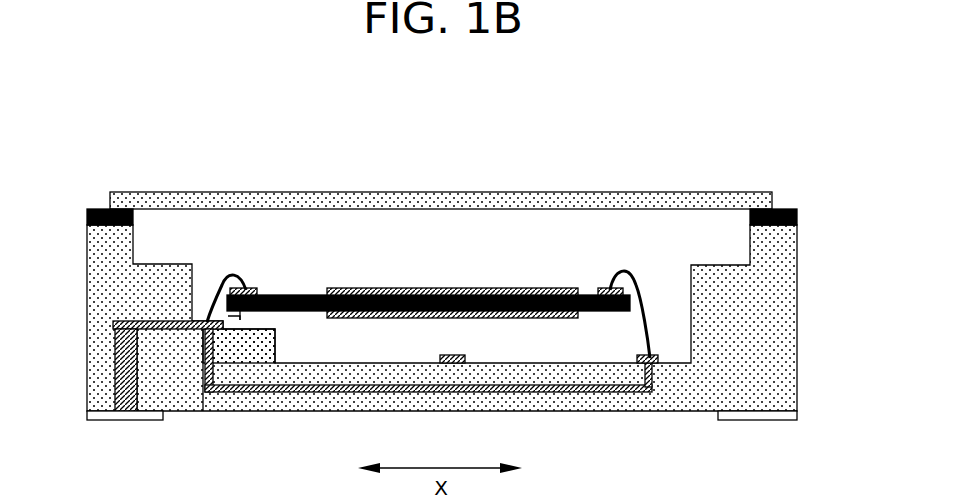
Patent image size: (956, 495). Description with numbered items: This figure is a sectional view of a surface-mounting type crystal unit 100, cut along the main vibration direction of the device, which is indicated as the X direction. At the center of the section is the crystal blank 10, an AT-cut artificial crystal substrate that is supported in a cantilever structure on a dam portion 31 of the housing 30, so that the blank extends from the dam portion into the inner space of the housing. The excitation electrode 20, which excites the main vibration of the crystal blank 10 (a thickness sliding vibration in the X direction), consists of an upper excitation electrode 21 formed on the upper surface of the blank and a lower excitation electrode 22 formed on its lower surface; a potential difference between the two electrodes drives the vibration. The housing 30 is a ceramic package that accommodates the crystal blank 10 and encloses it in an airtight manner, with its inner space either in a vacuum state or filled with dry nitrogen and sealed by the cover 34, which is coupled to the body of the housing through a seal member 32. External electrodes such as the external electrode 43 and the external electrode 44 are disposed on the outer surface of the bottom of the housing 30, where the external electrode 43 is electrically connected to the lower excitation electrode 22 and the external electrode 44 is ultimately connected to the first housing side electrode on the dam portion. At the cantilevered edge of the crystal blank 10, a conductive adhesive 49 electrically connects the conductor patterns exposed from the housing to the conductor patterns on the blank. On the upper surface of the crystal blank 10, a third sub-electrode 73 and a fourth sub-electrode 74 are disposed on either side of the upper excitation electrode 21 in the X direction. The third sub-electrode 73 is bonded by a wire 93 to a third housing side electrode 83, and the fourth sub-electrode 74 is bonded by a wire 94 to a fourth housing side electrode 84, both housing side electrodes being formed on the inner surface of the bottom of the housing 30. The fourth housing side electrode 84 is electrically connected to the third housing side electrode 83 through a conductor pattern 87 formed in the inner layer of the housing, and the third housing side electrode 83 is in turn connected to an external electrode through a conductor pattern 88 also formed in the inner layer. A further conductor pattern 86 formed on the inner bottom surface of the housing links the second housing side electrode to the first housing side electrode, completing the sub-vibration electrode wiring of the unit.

The crystal unit 100 is at (72, 89).
The crystal blank 10 is at (428, 201).
The excitation electrode 20 is at (428, 201).
The upper excitation electrode 21 is at (347, 288).
The lower excitation electrode 22 is at (393, 288).
The housing 30 is at (782, 314).
The dam portion 31 is at (260, 331).
The seal member 32 is at (788, 209).
The cover 34 is at (746, 194).
The external electrode 43 is at (120, 421).
The external electrode 44 is at (761, 421).
The conductive adhesive 49 is at (240, 314).
The third sub-electrode 73 is at (252, 288).
The fourth sub-electrode 74 is at (603, 288).
The third housing side electrode 83 is at (239, 318).
The fourth housing side electrode 84 is at (652, 354).
The conductor pattern 86 is at (453, 355).
The conductor pattern 87 is at (612, 393).
The conductor pattern 88 is at (113, 362).
The wire 93 is at (223, 290).
The wire 94 is at (641, 305).